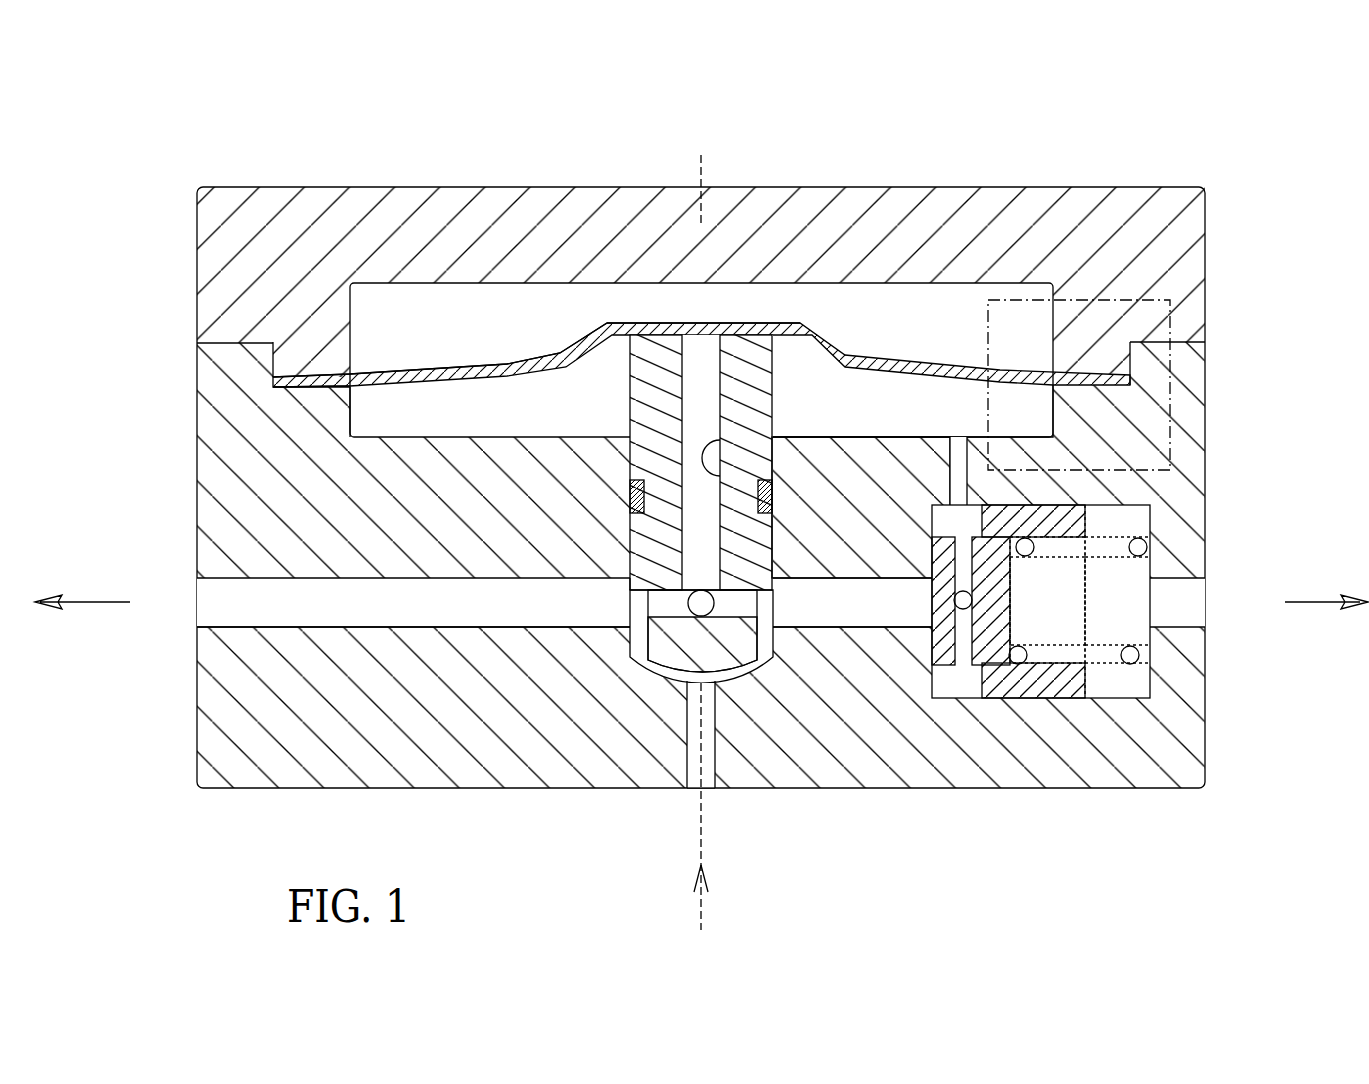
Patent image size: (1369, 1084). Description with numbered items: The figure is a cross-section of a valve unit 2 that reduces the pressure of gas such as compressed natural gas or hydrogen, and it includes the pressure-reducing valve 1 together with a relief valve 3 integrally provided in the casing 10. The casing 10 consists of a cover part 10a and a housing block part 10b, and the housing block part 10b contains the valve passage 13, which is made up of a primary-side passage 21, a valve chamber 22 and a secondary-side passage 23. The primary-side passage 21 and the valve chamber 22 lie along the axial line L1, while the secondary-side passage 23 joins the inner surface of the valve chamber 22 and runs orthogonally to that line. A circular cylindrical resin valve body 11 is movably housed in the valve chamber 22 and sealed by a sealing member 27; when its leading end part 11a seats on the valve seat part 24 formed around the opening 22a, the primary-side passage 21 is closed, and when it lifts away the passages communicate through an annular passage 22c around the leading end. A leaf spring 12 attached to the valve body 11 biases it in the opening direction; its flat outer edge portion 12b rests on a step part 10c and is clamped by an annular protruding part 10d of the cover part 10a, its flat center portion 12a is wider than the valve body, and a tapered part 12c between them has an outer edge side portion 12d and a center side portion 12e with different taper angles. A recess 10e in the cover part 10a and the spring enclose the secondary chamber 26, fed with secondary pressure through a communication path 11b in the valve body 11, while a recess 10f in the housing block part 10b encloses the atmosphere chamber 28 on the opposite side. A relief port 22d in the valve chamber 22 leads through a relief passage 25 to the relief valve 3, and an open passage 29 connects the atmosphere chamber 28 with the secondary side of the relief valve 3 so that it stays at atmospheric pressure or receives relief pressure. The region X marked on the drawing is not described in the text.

The pressure-reducing valve 1 is at (701, 459).
The valve unit 2 is at (701, 523).
The relief valve 3 is at (1133, 713).
The casing 10 is at (624, 487).
The cover part 10a is at (197, 318).
The housing block part 10b is at (197, 385).
The step part 10c is at (308, 418).
The annular protruding part 10d is at (312, 345).
The recess 10e is at (372, 300).
The recess 10f is at (352, 418).
The valve body 11 is at (694, 504).
The leading end part 11a is at (745, 670).
The communication path 11b is at (745, 465).
The leaf spring 12 is at (701, 358).
The center portion 12a is at (650, 323).
The outer edge portion 12b is at (322, 386).
The tapered part 12c is at (478, 288).
The outer edge side portion 12d is at (418, 360).
The center side portion 12e is at (575, 345).
The valve passage 13 is at (573, 648).
The primary-side passage 21 is at (700, 792).
The valve chamber 22 is at (738, 612).
The opening 22a is at (717, 697).
The annular passage 22c is at (630, 580).
The relief port 22d is at (773, 613).
The secondary-side passage 23 is at (505, 625).
The valve seat part 24 is at (660, 672).
The relief passage 25 is at (872, 627).
The secondary chamber 26 is at (701, 440).
The sealing member 27 is at (632, 508).
The atmosphere chamber 28 is at (835, 421).
The open passage 29 is at (955, 470).
The axial line L1 is at (701, 800).
The region X is at (1079, 378).